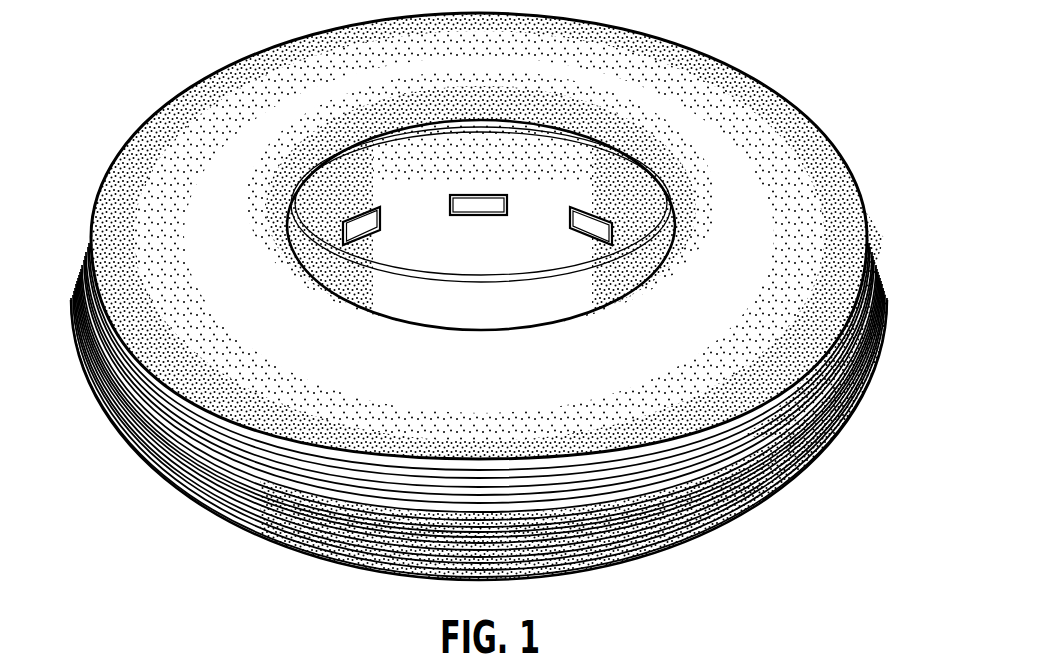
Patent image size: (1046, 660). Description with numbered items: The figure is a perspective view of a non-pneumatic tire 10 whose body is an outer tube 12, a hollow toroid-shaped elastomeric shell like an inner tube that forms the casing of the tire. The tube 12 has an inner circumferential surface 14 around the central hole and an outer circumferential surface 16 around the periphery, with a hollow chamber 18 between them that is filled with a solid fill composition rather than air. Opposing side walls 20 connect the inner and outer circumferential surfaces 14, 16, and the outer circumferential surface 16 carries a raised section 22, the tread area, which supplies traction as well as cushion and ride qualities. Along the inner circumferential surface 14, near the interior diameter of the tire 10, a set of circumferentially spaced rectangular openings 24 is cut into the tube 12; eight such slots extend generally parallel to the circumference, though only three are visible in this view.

The non-pneumatic tire 10 is at (860, 64).
The outer tube 12 is at (773, 98).
The inner circumferential surface 14 is at (480, 255).
The outer circumferential surface 16 is at (840, 163).
The hollow chamber 18 is at (482, 204).
The side walls 20 is at (222, 168).
The raised section 22 is at (82, 354).
The openings 24 is at (366, 210).